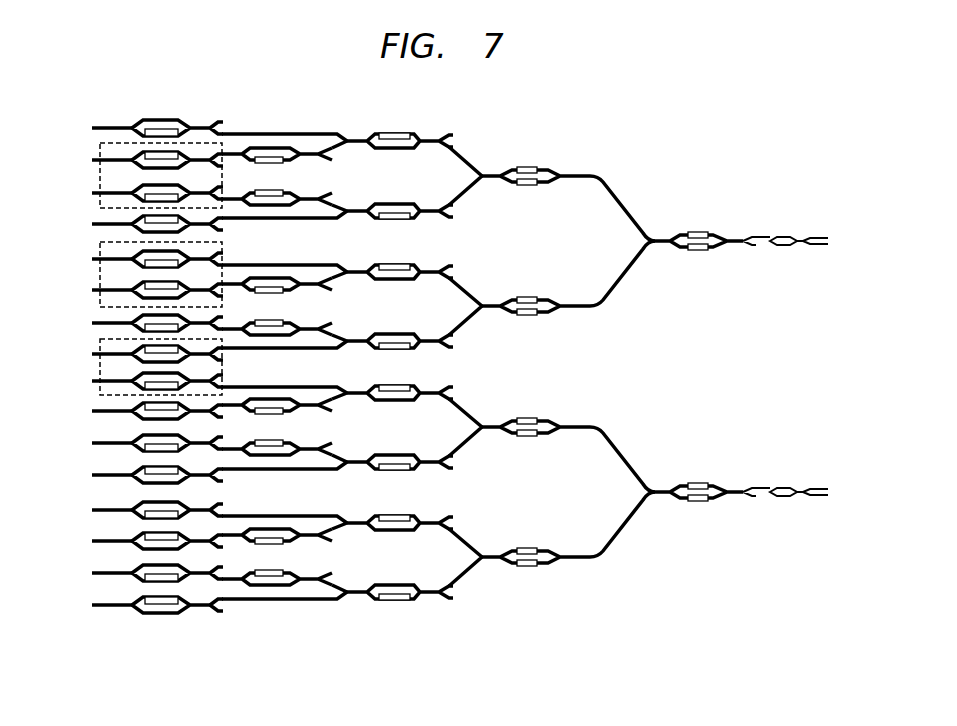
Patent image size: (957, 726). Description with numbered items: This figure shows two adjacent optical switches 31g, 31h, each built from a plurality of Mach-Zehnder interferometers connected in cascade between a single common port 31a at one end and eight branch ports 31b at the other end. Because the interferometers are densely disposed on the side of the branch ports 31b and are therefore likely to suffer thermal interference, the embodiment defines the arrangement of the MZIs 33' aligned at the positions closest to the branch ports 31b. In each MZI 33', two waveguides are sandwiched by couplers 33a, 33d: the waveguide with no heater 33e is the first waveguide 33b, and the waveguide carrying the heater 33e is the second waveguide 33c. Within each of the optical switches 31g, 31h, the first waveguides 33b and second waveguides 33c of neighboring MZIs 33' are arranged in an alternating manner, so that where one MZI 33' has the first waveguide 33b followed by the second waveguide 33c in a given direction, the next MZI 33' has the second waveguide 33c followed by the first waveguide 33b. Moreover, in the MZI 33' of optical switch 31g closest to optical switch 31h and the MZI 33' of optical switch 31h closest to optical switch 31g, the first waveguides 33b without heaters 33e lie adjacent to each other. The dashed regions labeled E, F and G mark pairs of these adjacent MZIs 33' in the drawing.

The common port 31a is at (742, 218).
The branch ports 31b is at (96, 110).
The optical switch 31g is at (585, 125).
The optical switch 31h is at (590, 403).
The Mach-Zehnder interferometer 33' is at (155, 639).
The coupler 33a is at (122, 607).
The first waveguide 33b is at (147, 612).
The second waveguide 33c is at (188, 612).
The coupler 33d is at (205, 610).
The heater 33e is at (155, 598).
The modulator pair E is at (100, 177).
The modulator pair F is at (100, 272).
The modulator pair G is at (100, 369).